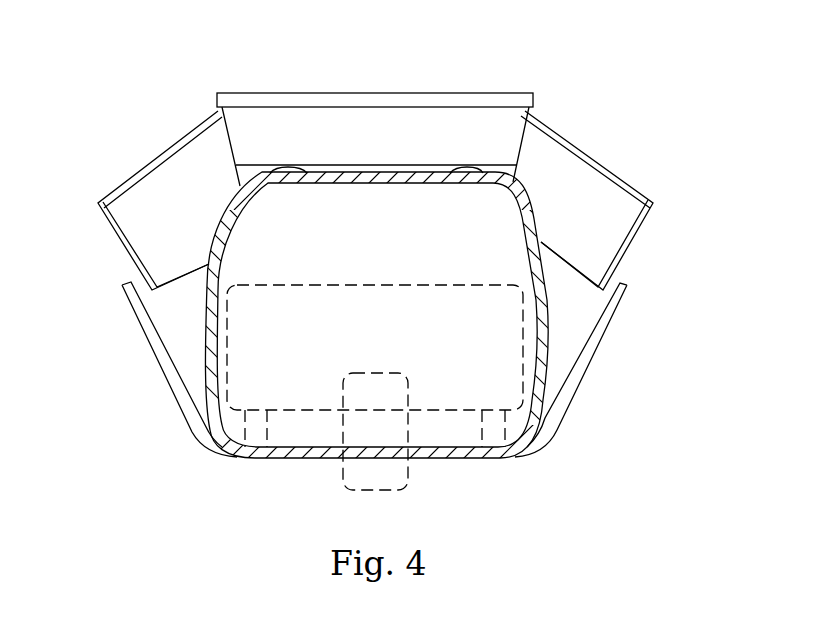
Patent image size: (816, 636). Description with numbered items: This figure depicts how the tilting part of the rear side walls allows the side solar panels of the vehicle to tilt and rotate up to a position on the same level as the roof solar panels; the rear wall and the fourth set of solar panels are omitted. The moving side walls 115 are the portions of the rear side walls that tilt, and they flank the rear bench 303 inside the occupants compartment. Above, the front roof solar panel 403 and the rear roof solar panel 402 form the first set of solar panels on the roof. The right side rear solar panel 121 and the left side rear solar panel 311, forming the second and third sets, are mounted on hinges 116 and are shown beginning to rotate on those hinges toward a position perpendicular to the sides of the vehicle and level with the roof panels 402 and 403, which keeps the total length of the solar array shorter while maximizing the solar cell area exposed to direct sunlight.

The front roof solar panel 403 is at (285, 93).
The rear roof solar panel 402 is at (337, 165).
The hinges 116 is at (465, 173).
The right side rear solar panel(s) 121 is at (173, 140).
The left side rear solar panel(s) 311 is at (593, 150).
The moving side walls 115 is at (140, 338).
The rear bench 303 is at (400, 361).